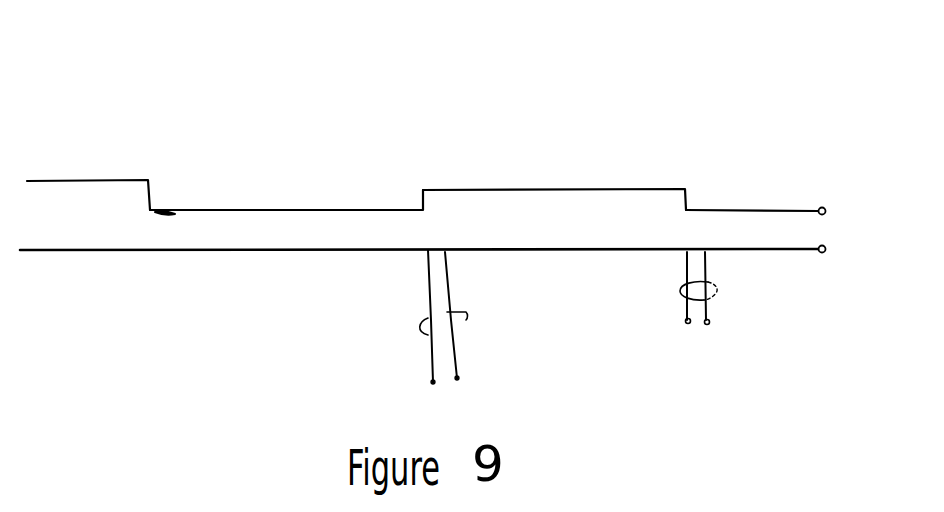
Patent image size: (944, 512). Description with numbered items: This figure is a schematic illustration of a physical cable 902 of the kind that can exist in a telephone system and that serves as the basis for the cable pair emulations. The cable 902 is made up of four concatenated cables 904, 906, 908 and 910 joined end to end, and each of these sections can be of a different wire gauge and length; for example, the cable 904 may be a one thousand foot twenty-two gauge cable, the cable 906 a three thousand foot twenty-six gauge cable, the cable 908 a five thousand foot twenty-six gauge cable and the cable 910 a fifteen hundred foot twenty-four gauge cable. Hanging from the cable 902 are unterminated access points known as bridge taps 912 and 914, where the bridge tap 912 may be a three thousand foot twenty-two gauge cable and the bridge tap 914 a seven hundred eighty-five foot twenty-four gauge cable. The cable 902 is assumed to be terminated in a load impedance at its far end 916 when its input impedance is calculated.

The physical cable 902 is at (621, 85).
The cable 904 is at (100, 177).
The cable 906 is at (296, 210).
The cable 908 is at (583, 188).
The cable 910 is at (752, 210).
The bridge tap 912 is at (463, 355).
The bridge tap 914 is at (722, 308).
The end 916 is at (826, 200).